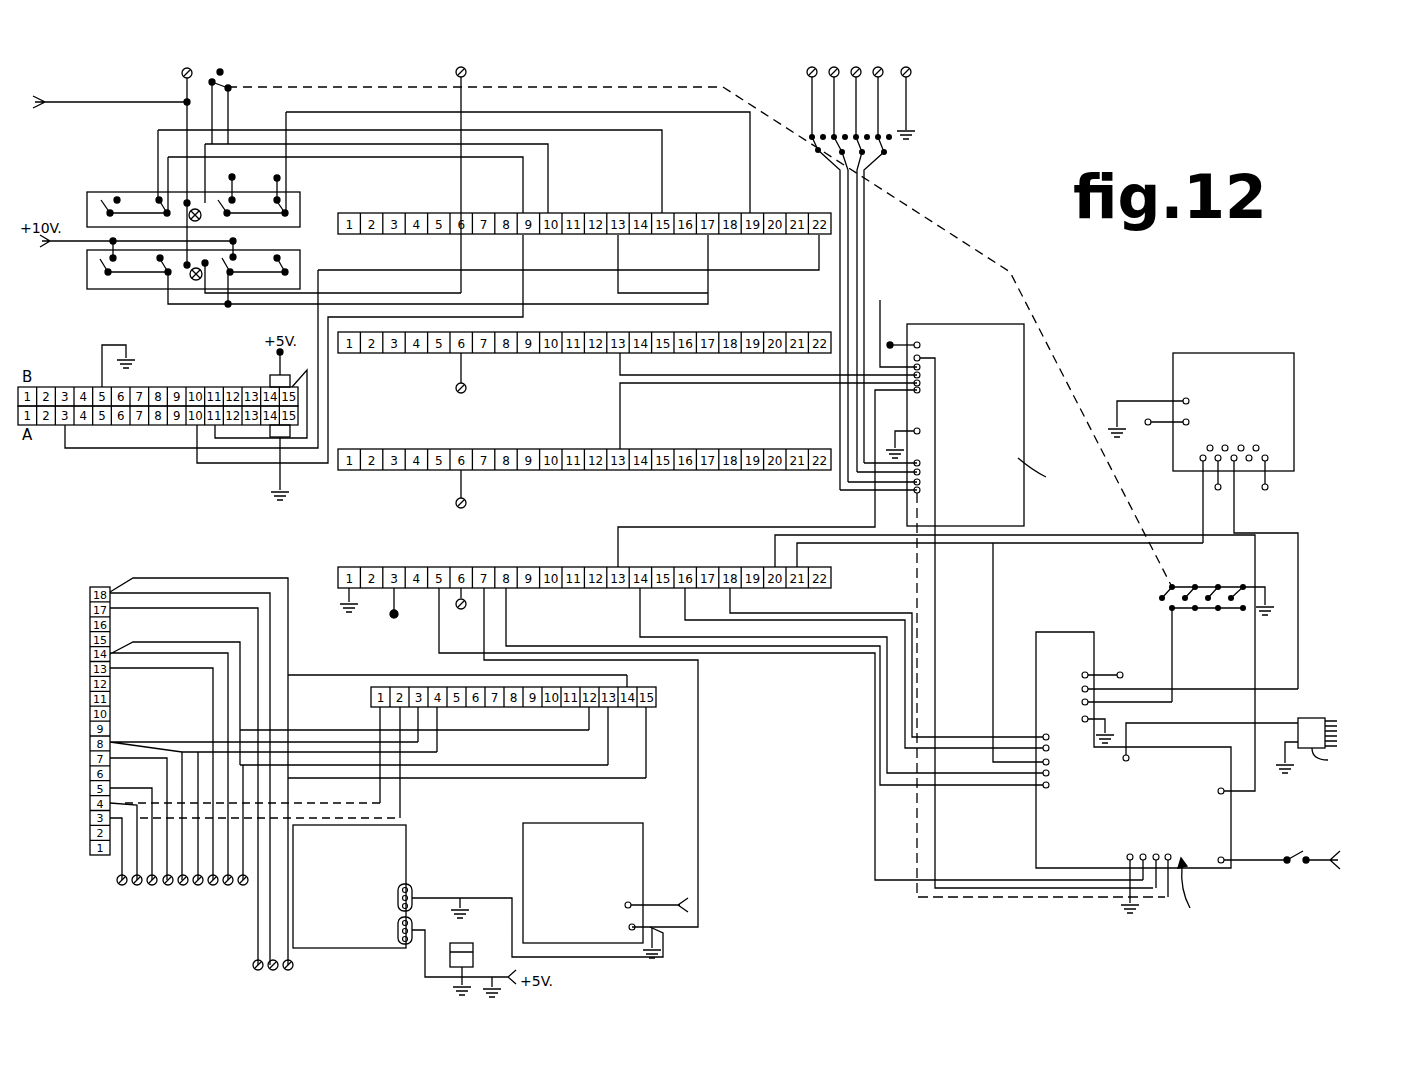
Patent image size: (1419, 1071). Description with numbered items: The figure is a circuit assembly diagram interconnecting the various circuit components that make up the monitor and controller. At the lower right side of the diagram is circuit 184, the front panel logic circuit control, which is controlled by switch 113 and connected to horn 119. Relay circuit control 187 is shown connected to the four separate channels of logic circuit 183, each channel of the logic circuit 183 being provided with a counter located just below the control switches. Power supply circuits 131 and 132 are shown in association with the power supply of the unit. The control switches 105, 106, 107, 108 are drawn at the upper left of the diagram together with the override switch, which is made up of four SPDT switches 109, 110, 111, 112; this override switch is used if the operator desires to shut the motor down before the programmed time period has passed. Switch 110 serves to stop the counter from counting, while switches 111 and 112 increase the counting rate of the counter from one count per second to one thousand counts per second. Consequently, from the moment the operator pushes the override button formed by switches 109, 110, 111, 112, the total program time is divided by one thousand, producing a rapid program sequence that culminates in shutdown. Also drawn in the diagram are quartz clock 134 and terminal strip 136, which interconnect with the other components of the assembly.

The switch 105 is at (102, 284).
The switch 106 is at (159, 284).
The switch 107 is at (233, 257).
The switch 108 is at (292, 258).
The override switch 109 is at (110, 197).
The override switch 110 is at (158, 195).
The override switch 111 is at (221, 194).
The override switch 112 is at (273, 197).
The switch 113 is at (236, 79).
The horn 119 is at (1310, 725).
The power supply circuit 131 is at (322, 940).
The power supply circuit 132 is at (523, 851).
The quartz clock 134 is at (1173, 373).
The terminal strip 136 is at (366, 697).
The logic circuit 183 is at (709, 209).
The front panel logic circuit control 184 is at (1160, 812).
The relay circuit control 187 is at (992, 437).